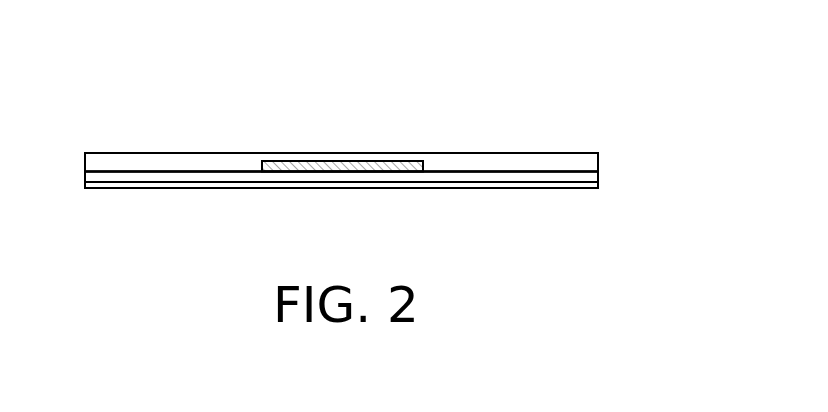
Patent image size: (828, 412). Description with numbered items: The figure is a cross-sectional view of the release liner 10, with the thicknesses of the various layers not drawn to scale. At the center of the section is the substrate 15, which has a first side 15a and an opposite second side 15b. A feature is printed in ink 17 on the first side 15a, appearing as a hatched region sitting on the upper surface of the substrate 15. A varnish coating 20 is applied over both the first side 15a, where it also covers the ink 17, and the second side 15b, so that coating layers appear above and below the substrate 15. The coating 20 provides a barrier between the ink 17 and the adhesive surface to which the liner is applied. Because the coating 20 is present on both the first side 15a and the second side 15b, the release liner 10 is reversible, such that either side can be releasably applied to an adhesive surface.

The release liner 10 is at (632, 88).
The substrate 15 is at (588, 177).
The first side 15a is at (124, 171).
The second side 15b is at (143, 182).
The ink 17 is at (368, 167).
The varnish coating 20 is at (535, 162).